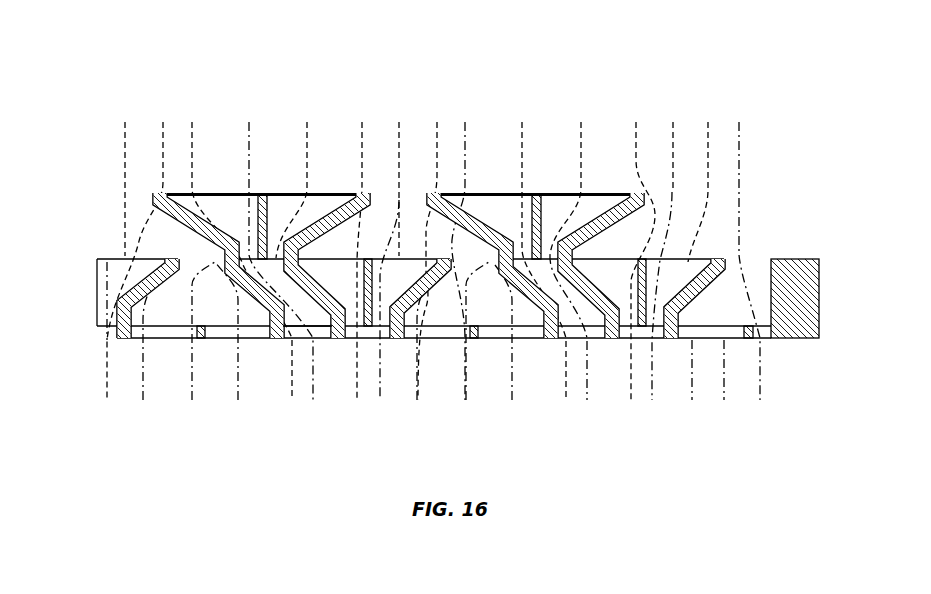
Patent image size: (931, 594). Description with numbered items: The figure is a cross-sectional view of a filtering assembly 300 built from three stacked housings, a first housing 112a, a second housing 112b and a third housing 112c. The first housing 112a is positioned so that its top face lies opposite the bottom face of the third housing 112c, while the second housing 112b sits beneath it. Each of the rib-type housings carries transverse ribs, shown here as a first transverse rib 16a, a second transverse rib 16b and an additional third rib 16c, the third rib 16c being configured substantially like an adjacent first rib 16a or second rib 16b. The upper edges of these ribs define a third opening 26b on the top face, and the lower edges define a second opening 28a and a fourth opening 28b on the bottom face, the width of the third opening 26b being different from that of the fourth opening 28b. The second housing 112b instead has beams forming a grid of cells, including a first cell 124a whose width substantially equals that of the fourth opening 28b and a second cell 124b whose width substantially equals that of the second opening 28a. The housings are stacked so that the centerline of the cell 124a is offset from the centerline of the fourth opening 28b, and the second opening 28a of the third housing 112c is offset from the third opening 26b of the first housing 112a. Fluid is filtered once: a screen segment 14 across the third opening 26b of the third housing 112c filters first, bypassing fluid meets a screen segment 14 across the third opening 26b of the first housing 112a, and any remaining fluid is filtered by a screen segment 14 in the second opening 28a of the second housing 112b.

The filtering assembly 300 is at (735, 72).
The screen segment 14 is at (227, 203).
The third opening 26b is at (315, 195).
The second opening 28a is at (168, 340).
The fourth opening 28b is at (510, 201).
The first housing 112a is at (143, 335).
The second housing 112b is at (263, 340).
The third housing 112c is at (160, 192).
The first cell 124a is at (487, 340).
The second cell 124b is at (553, 338).
The first transverse rib 16a is at (323, 340).
The second transverse rib 16b is at (437, 338).
The third rib 16c is at (522, 338).